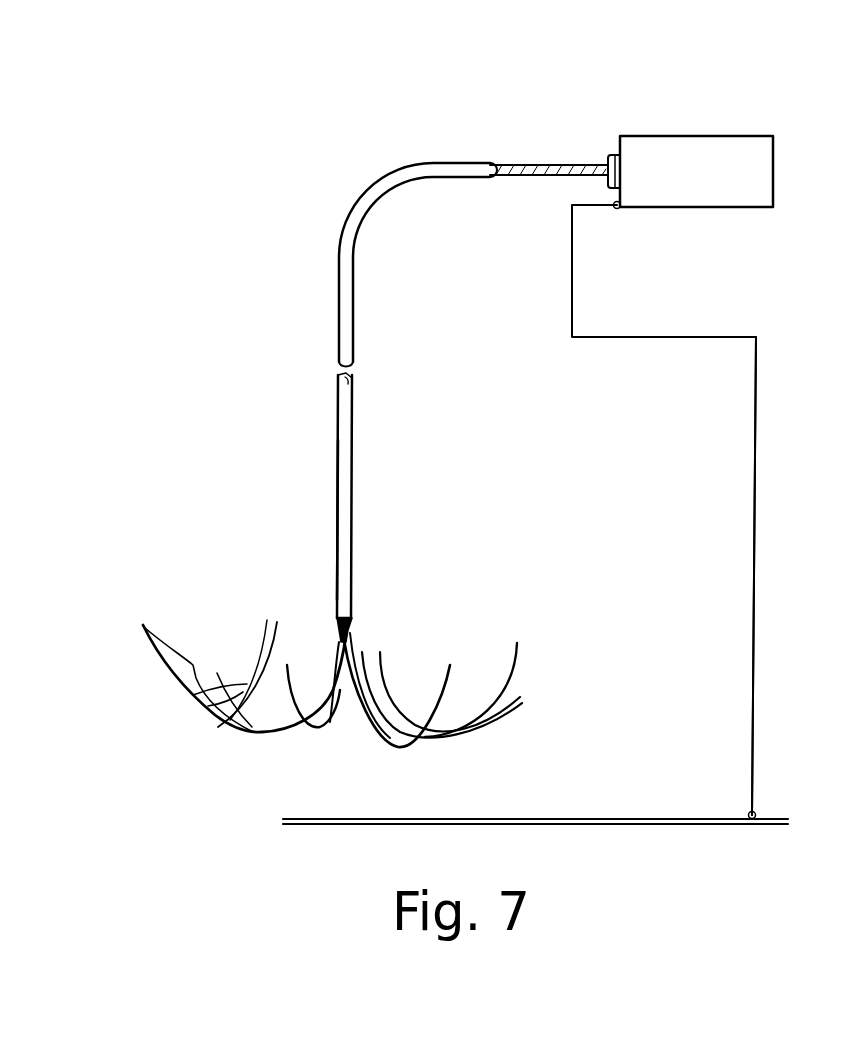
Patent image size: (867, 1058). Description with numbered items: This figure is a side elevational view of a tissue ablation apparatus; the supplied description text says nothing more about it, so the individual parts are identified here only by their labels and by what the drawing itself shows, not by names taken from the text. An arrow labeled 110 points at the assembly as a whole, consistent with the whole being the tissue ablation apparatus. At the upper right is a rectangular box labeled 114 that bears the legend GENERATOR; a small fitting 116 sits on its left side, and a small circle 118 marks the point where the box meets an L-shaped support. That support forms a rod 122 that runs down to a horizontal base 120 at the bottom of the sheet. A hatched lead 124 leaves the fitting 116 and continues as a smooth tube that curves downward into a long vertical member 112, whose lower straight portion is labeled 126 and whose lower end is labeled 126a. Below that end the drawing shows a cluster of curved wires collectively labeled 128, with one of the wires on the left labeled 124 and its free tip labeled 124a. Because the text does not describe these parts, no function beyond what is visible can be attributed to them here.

The surgical instrument system 110 is at (698, 258).
The instrument 112 is at (353, 422).
The generator 114 is at (727, 133).
The connector 116 is at (608, 160).
The pivot 118 is at (619, 210).
The base 120 is at (657, 817).
The support rod 122 is at (757, 417).
The cable 124 is at (530, 162).
The cable end 124a is at (145, 628).
The tubular shaft 126 is at (351, 523).
The distal end of shaft 126a is at (351, 617).
The wire basket 128 is at (560, 700).